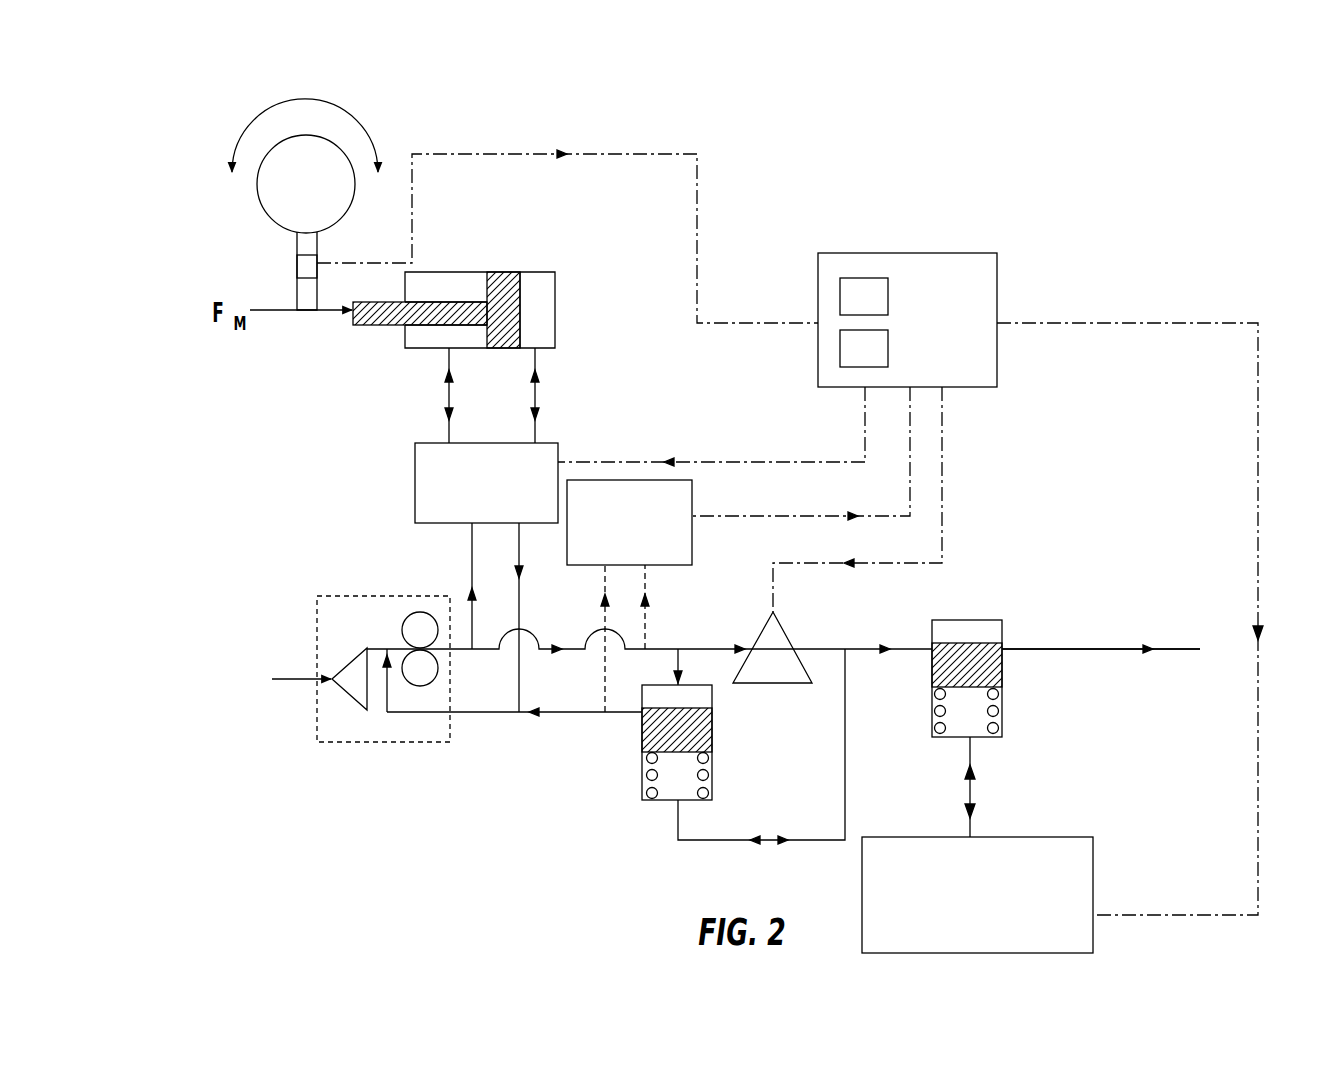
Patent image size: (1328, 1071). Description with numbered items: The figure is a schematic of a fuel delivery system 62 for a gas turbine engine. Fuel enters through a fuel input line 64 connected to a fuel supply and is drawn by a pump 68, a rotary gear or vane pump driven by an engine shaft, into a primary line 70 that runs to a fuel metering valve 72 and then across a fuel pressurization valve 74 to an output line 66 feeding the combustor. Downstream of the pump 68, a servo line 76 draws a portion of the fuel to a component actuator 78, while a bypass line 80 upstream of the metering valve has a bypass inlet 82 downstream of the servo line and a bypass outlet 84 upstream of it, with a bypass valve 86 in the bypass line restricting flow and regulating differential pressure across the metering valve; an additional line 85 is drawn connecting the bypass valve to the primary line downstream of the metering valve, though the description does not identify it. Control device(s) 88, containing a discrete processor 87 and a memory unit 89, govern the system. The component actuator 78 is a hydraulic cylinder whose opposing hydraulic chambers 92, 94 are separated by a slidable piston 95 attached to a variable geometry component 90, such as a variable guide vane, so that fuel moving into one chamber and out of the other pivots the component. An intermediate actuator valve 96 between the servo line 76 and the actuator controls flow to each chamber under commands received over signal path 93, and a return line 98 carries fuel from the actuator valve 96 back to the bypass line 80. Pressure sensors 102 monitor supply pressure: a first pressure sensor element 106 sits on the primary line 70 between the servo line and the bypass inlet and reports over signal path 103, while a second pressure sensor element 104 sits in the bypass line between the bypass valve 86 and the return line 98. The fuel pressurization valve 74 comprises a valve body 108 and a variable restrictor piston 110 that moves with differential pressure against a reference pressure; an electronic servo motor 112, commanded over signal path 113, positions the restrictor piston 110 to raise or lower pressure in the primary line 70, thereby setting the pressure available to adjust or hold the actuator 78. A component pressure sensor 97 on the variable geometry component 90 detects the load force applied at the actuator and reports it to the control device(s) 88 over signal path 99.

The fuel delivery system 62 is at (1140, 203).
The fuel input line 64 is at (293, 679).
The output line 66 is at (1093, 648).
The pump 68 is at (383, 640).
The primary line 70 is at (712, 647).
The fuel metering valve 72 is at (778, 685).
The fuel pressurization valve 74 is at (1087, 718).
The servo line 76 is at (470, 573).
The component actuator 78 is at (484, 314).
The bypass line 80 is at (573, 715).
The bypass inlet 82 is at (679, 648).
The bypass outlet 84 is at (387, 653).
The bypass valve sensing line 85 is at (747, 843).
The bypass valve 86 is at (642, 777).
The processor 87 is at (867, 293).
The control device 88 is at (941, 325).
The memory unit 89 is at (877, 348).
The variable geometry component 90 is at (257, 188).
The hydraulic chamber 92 is at (433, 342).
The signal path 93 is at (737, 462).
The hydraulic chamber 94 is at (547, 333).
The slidable piston 95 is at (507, 270).
The intermediate actuator valve 96 is at (474, 521).
The component pressure sensor 97 is at (297, 268).
The return line 98 is at (520, 603).
The signal path 99 is at (778, 322).
The pressure sensor 102 is at (611, 556).
The signal path 103 is at (833, 515).
The second pressure sensor element 104 is at (603, 710).
The first pressure sensor element 106 is at (647, 642).
The valve body 108 is at (1003, 727).
The variable restrictor piston 110 is at (993, 663).
The electronic servo motor 112 is at (961, 944).
The signal path 113 is at (1258, 443).